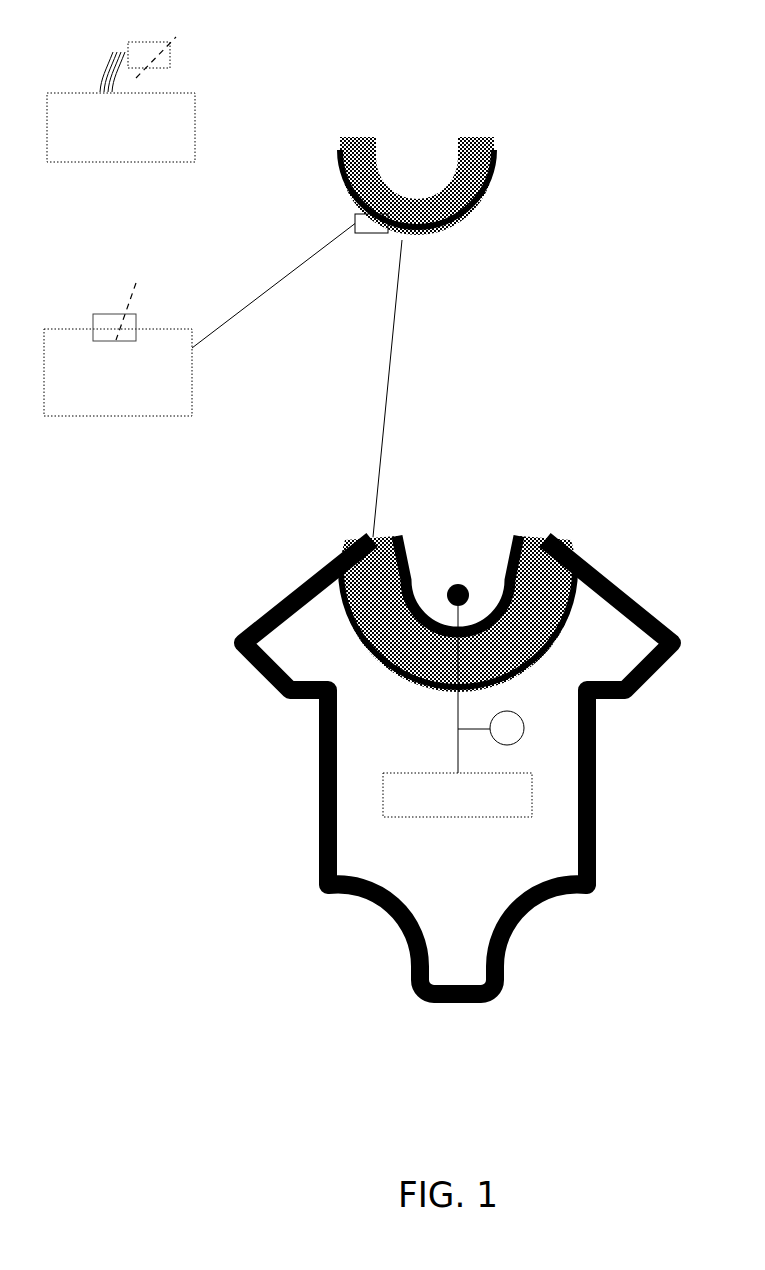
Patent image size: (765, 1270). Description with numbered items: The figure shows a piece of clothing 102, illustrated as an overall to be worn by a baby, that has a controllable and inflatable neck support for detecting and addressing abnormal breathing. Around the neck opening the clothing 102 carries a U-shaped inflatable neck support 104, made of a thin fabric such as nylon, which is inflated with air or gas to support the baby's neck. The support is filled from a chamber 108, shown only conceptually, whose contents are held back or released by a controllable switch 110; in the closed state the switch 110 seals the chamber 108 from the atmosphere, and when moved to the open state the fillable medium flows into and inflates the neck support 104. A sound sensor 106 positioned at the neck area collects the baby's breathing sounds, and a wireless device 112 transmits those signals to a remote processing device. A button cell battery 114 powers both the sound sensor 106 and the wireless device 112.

The piece of clothing 102 is at (620, 570).
The inflatable neck support 104 is at (399, 547).
The sound sensor 106 is at (463, 582).
The chamber 108 is at (72, 163).
The controllable switch 110 is at (143, 43).
The wireless device 112 is at (457, 795).
The button cell battery 114 is at (524, 742).